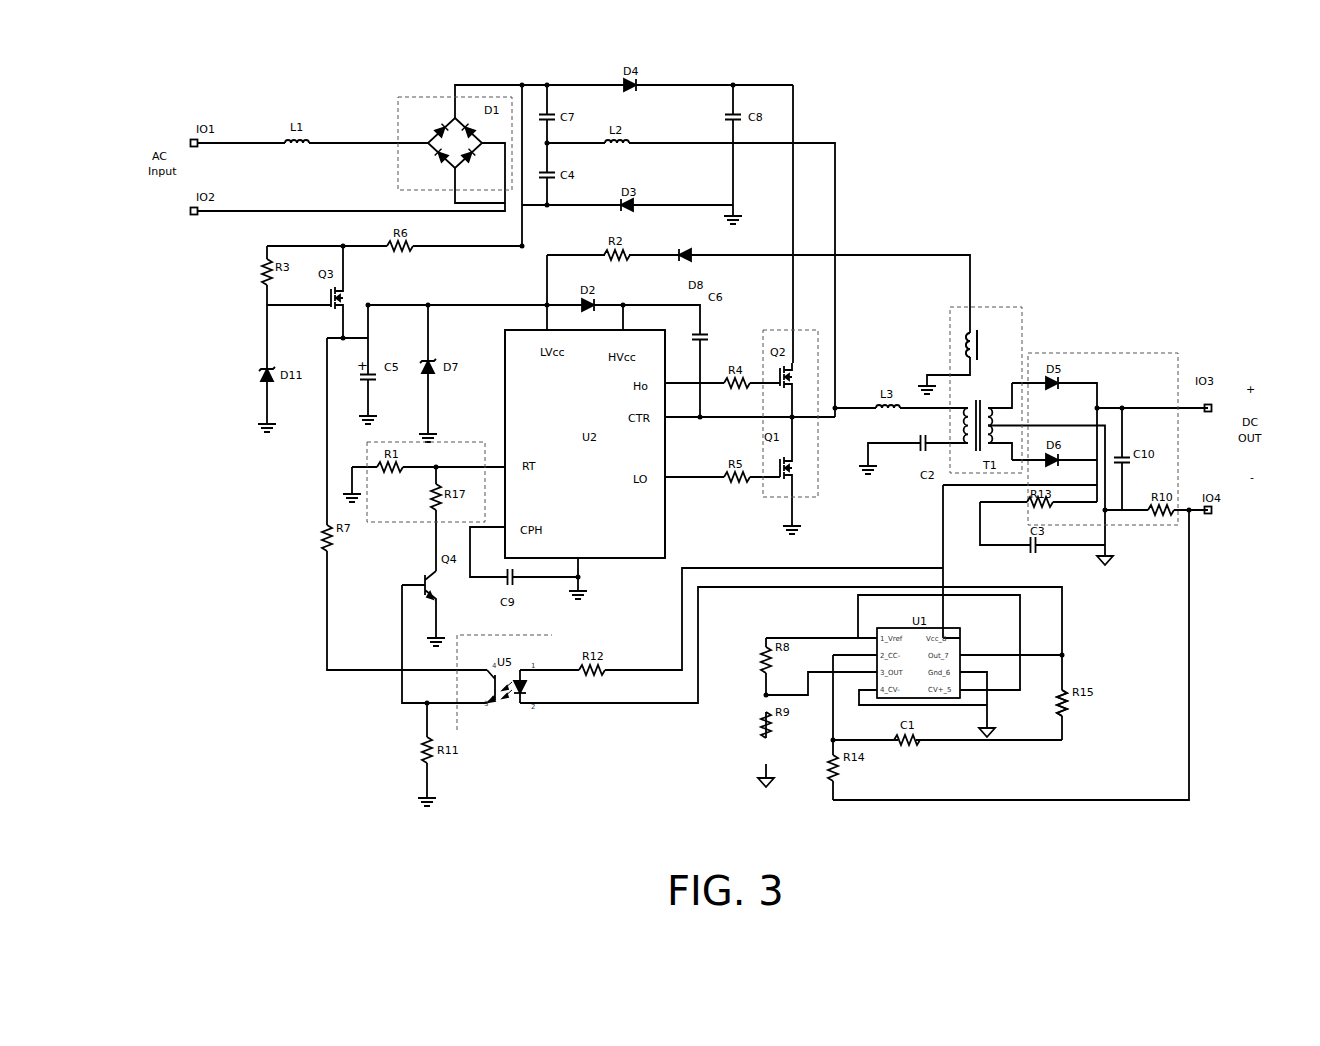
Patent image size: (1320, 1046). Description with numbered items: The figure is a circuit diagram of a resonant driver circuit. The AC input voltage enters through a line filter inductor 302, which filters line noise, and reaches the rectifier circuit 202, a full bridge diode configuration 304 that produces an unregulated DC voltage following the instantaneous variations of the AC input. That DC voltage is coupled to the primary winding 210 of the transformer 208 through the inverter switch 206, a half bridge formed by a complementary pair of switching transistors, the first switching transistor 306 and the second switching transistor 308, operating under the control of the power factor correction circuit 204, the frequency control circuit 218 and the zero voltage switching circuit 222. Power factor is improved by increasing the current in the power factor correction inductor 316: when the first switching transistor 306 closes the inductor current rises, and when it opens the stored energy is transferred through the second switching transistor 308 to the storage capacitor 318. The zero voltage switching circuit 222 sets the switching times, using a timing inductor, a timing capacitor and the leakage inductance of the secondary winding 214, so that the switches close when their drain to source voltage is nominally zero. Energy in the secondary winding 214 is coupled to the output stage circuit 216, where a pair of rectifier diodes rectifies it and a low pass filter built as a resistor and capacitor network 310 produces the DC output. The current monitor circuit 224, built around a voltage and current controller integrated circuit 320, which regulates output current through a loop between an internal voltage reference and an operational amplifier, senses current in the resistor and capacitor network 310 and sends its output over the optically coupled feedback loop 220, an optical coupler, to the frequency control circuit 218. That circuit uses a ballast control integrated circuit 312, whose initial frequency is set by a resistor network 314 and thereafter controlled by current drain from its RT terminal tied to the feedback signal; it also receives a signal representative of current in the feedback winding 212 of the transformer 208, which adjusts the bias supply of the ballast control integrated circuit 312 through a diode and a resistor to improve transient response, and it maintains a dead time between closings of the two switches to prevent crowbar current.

The rectifier circuit 202 is at (421, 127).
The power factor correction circuit 204 is at (697, 59).
The inverter switch 206 is at (818, 357).
The transformer 208 is at (1022, 360).
The primary winding 210 is at (960, 443).
The feedback winding 212 is at (960, 333).
The secondary winding 214 is at (993, 403).
The output stage circuit 216 is at (1160, 353).
The frequency control circuit 218 is at (260, 547).
The feedback loop 220 is at (537, 732).
The zero voltage switching circuit 222 is at (852, 433).
The current monitor circuit 224 is at (1097, 642).
The inductor L1 302 is at (298, 147).
The diode configuration D1 304 is at (417, 156).
The switching transistor Q1 306 is at (780, 487).
The switching transistor Q2 308 is at (787, 337).
The resistor and capacitor network 310 is at (1141, 484).
The integrated circuit U2 312 is at (598, 562).
The resistor network R1, R17 314 is at (443, 440).
The inductor L2 316 is at (632, 143).
The capacitor C8 318 is at (785, 85).
The integrated circuit U1 320 is at (877, 632).